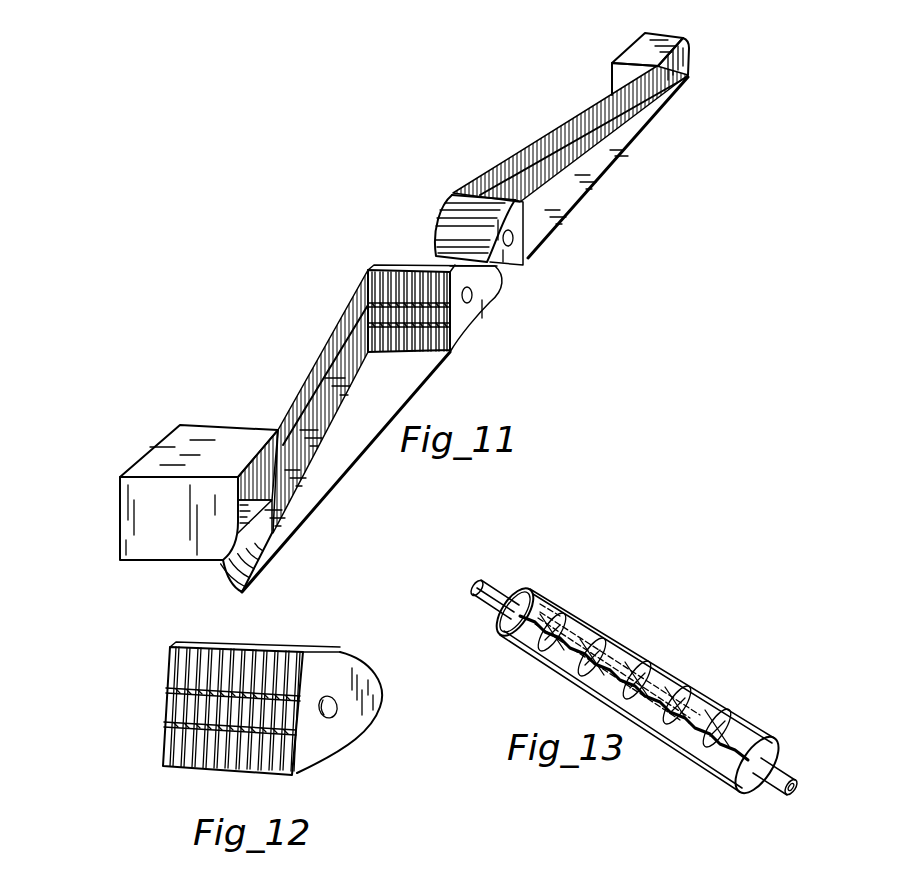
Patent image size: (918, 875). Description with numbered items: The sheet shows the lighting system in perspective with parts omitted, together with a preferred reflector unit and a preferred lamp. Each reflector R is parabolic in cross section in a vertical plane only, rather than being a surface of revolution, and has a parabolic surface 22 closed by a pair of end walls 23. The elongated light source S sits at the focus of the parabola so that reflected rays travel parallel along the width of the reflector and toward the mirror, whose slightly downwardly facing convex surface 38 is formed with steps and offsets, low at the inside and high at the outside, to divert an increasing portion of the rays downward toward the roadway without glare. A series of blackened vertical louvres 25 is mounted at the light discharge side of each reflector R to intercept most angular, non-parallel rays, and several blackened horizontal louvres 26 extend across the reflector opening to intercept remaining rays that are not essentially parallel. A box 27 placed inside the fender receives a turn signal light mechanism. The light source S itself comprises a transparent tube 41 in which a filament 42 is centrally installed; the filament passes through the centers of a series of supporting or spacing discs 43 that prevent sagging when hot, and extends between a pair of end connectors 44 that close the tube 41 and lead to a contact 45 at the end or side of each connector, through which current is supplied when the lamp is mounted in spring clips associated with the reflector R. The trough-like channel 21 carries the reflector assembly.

In FIG. 11, the channel trough 21 is at (597, 182).
In FIG. 11, the parabolic surface 22 is at (483, 222).
In FIG. 12, the parabolic surface 22 is at (230, 645).
In FIG. 11, the end walls 23 is at (483, 287).
In FIG. 12, the end walls 23 is at (368, 697).
In FIG. 11, the vertical louvres 25 is at (415, 340).
In FIG. 12, the vertical louvres 25 is at (207, 707).
In FIG. 11, the horizontal louvres 26 is at (417, 327).
In FIG. 12, the horizontal louvres 26 is at (197, 728).
In FIG. 11, the box 27 is at (630, 60).
In FIG. 11, the convex surface 38 is at (587, 108).
In FIG. 11, the reflector R is at (441, 214).
In FIG. 12, the reflector R is at (342, 645).
In FIG. 11, the light source S is at (514, 238).
In FIG. 12, the light source S is at (338, 713).
In FIG. 13, the light source S is at (771, 725).
In FIG. 13, the transparent tube 41 is at (666, 672).
In FIG. 13, the filament 42 is at (683, 742).
In FIG. 13, the supporting or spacing discs 43 is at (627, 670).
In FIG. 13, the end connectors 44 is at (497, 590).
In FIG. 13, the contact 45 is at (797, 785).